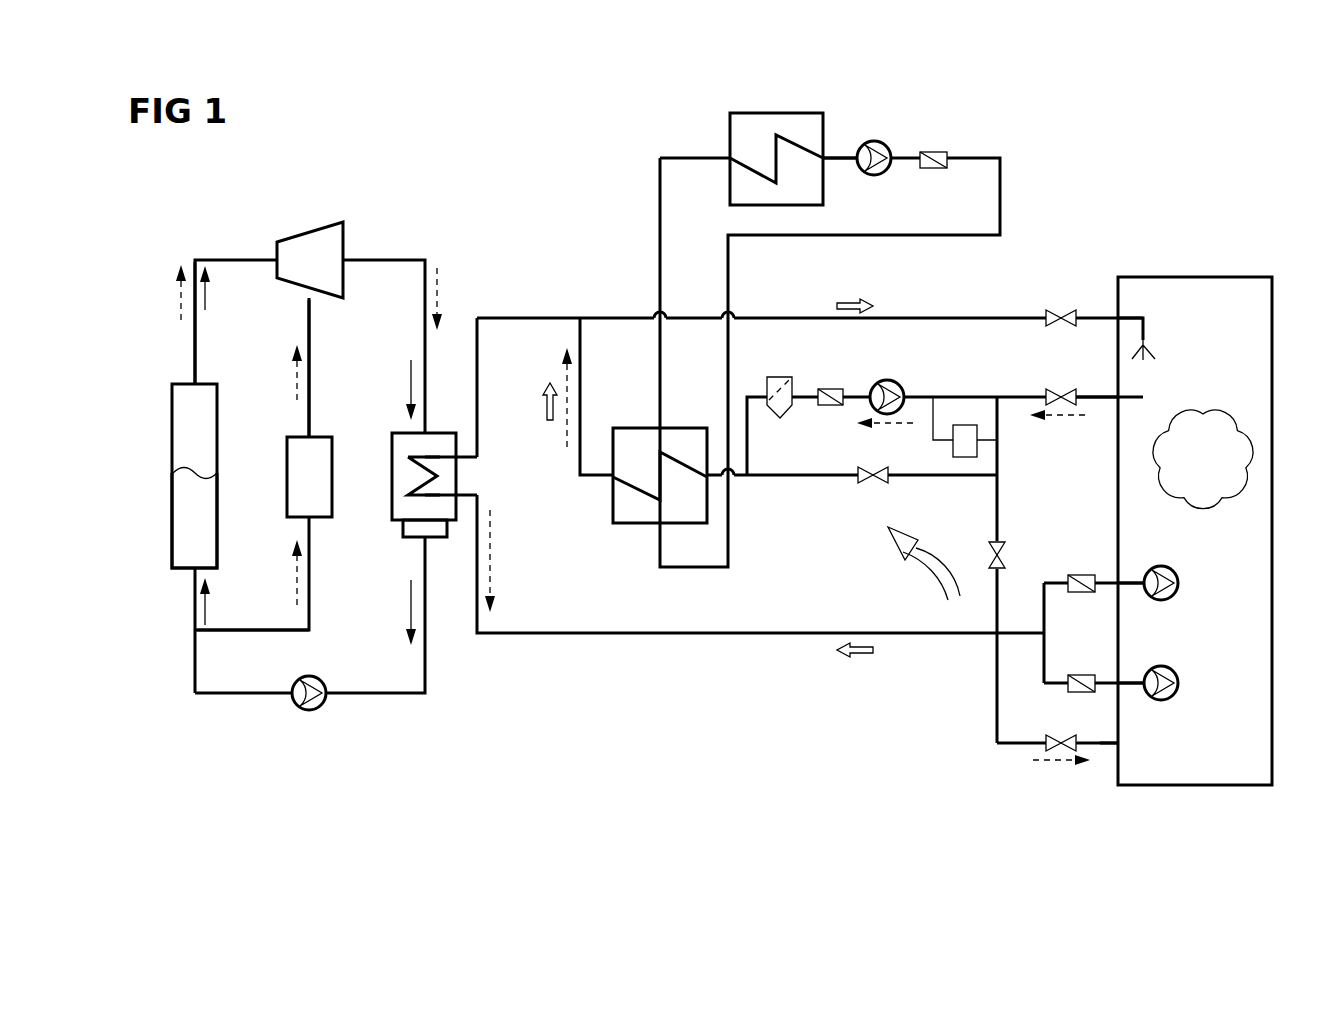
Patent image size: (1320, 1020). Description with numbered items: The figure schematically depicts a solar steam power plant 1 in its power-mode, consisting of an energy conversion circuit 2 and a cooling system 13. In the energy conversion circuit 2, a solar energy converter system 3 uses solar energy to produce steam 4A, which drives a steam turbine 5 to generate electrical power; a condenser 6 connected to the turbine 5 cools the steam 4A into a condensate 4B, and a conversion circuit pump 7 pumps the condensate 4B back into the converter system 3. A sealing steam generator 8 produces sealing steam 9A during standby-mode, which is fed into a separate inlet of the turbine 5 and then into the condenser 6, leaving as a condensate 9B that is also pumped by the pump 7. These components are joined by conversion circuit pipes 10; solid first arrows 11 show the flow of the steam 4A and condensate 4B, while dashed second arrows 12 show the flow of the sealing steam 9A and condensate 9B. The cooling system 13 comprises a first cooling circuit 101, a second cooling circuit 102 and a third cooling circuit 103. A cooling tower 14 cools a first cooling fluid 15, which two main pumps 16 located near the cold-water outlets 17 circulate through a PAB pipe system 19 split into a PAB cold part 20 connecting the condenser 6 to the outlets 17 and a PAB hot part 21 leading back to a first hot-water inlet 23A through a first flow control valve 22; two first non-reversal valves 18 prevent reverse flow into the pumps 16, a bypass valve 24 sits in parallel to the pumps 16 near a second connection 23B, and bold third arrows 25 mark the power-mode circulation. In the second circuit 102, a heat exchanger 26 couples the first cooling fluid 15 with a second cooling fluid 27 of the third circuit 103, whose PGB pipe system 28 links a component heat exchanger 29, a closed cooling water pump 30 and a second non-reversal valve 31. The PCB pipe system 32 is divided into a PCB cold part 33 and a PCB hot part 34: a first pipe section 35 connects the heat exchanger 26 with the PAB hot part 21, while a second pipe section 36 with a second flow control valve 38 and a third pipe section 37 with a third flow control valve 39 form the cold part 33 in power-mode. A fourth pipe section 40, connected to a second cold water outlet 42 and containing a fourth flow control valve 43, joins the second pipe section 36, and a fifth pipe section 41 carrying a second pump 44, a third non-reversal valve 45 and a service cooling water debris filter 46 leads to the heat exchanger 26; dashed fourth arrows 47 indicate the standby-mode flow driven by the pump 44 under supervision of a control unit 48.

The solar steam power plant 1 is at (1208, 158).
The energy conversion circuit 2 is at (378, 195).
The solar energy converter system 3 is at (218, 525).
The steam 4A is at (194, 353).
The condensate of the steam 4B is at (180, 533).
The steam turbine 5 is at (306, 238).
The condenser 6 is at (391, 475).
The conversion circuit pump 7 is at (309, 712).
The sealing steam generator 8 is at (286, 475).
The sealing steam 9A is at (311, 378).
The condensate of the sealing steam 9B is at (252, 633).
The conversion circuit pipes 10 is at (232, 258).
The first arrows 11 is at (207, 300).
The second arrows 12 is at (178, 292).
The cooling system 13 is at (516, 718).
The cooling tower 14 is at (1198, 276).
The first cooling fluid 15 is at (1201, 403).
The main pumps 16 is at (1179, 583).
The cold-water outlets 17 is at (1121, 582).
The first non-reversal valves 18 is at (1082, 574).
The PAB pipe system 19 is at (624, 316).
The PAB cold part 20 is at (607, 657).
The PAB hot part 21 is at (938, 305).
The first flow control valve 22 is at (1059, 310).
The first hot-water inlet 23A is at (1117, 312).
The connection point 23B is at (1117, 740).
The bypass valve 24 is at (1060, 734).
The third arrows 25 is at (850, 299).
The heat exchanger 26 is at (684, 427).
The second cooling fluid 27 is at (866, 168).
The PGB pipe system 28 is at (657, 222).
The component heat exchanger 29 is at (729, 150).
The closed cooling water pump 30 is at (877, 142).
The second non-reversal valve 31 is at (934, 150).
The PCB pipe system 32 is at (821, 490).
The PCB cold part 33 is at (772, 490).
The PCB hot part 34 is at (594, 488).
The first pipe section 35 is at (584, 395).
The second pipe section 36 is at (995, 608).
The third pipe section 37 is at (940, 480).
The second flow control valve 38 is at (1008, 556).
The third flow control valve 39 is at (869, 485).
The fourth pipe section 40 is at (1116, 405).
The fifth pipe section 41 is at (950, 395).
The second cold water outlet 42 is at (1116, 395).
The fourth flow control valve 43 is at (1059, 390).
The second pump 44 is at (889, 380).
The third non-reversal valve 45 is at (833, 387).
The service cooling water debris filter 46 is at (780, 375).
The fourth arrows 47 is at (563, 428).
The control unit 48 is at (999, 442).
The first cooling circuit (PAB) 101 is at (660, 657).
The second cooling circuit (PCB) 102 is at (569, 486).
The third cooling circuit (PGB) 103 is at (650, 160).